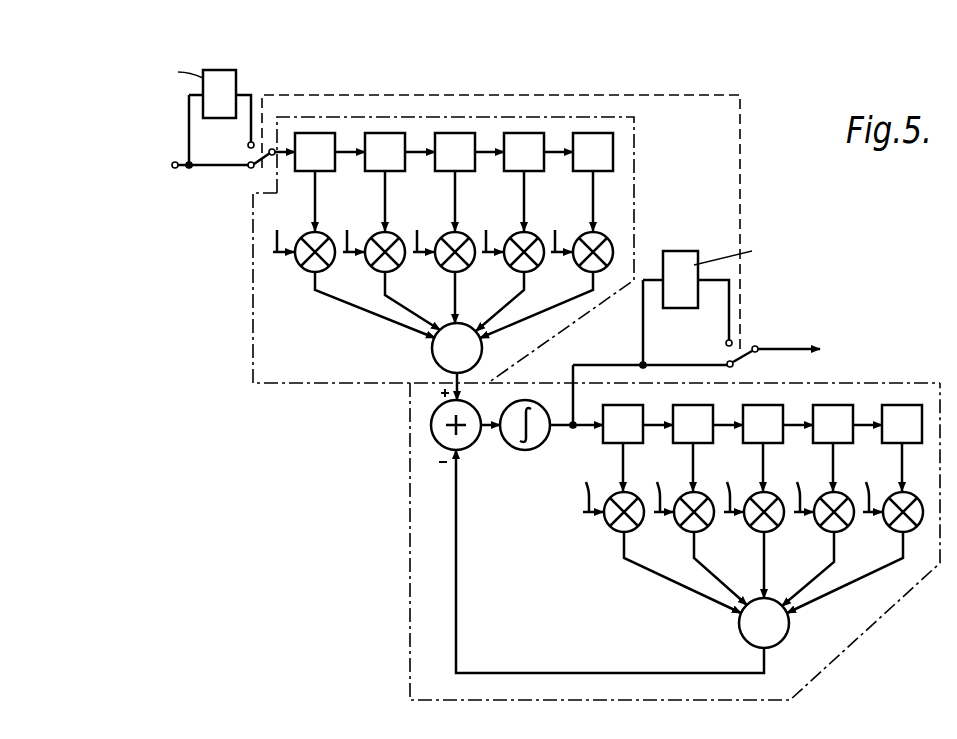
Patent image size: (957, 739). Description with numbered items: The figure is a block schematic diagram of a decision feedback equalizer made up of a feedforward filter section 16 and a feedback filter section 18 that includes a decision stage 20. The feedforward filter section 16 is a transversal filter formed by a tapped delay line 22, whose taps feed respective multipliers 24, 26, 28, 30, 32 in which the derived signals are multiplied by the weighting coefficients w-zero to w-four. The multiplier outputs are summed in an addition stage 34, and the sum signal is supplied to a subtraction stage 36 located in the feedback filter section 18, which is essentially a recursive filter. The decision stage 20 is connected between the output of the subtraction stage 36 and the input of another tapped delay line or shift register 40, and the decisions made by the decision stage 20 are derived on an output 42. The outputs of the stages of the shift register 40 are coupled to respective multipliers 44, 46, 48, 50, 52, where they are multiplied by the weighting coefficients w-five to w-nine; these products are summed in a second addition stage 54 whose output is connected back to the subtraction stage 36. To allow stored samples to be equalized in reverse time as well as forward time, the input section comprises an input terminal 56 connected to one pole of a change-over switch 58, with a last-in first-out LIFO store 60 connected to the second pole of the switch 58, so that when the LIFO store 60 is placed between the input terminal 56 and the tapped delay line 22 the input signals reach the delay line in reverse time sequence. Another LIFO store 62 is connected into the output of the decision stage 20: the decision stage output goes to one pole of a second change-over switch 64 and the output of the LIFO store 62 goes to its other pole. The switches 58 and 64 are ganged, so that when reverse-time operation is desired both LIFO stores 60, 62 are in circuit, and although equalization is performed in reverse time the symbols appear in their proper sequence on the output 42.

The feedforward filter section 16 is at (270, 352).
The feedback filter section 18 is at (420, 623).
The decision stage 20 is at (532, 445).
The tapped delay line 22 is at (616, 145).
The multiplier 24 is at (312, 268).
The multiplier 26 is at (382, 268).
The multiplier 28 is at (452, 268).
The multiplier 30 is at (521, 268).
The multiplier 32 is at (590, 268).
The addition stage 34 is at (432, 350).
The subtraction stage 36 is at (465, 440).
The shift register 40 is at (842, 399).
The output 42 is at (787, 346).
The multiplier 44 is at (618, 530).
The multiplier 46 is at (690, 530).
The multiplier 48 is at (760, 530).
The multiplier 50 is at (830, 530).
The multiplier 52 is at (898, 530).
The addition stage 54 is at (738, 624).
The input terminal 56 is at (176, 170).
The change-over switch 58 is at (268, 158).
The LIFO store 60 is at (227, 90).
The LIFO store 62 is at (690, 263).
The change-over switch 64 is at (728, 356).